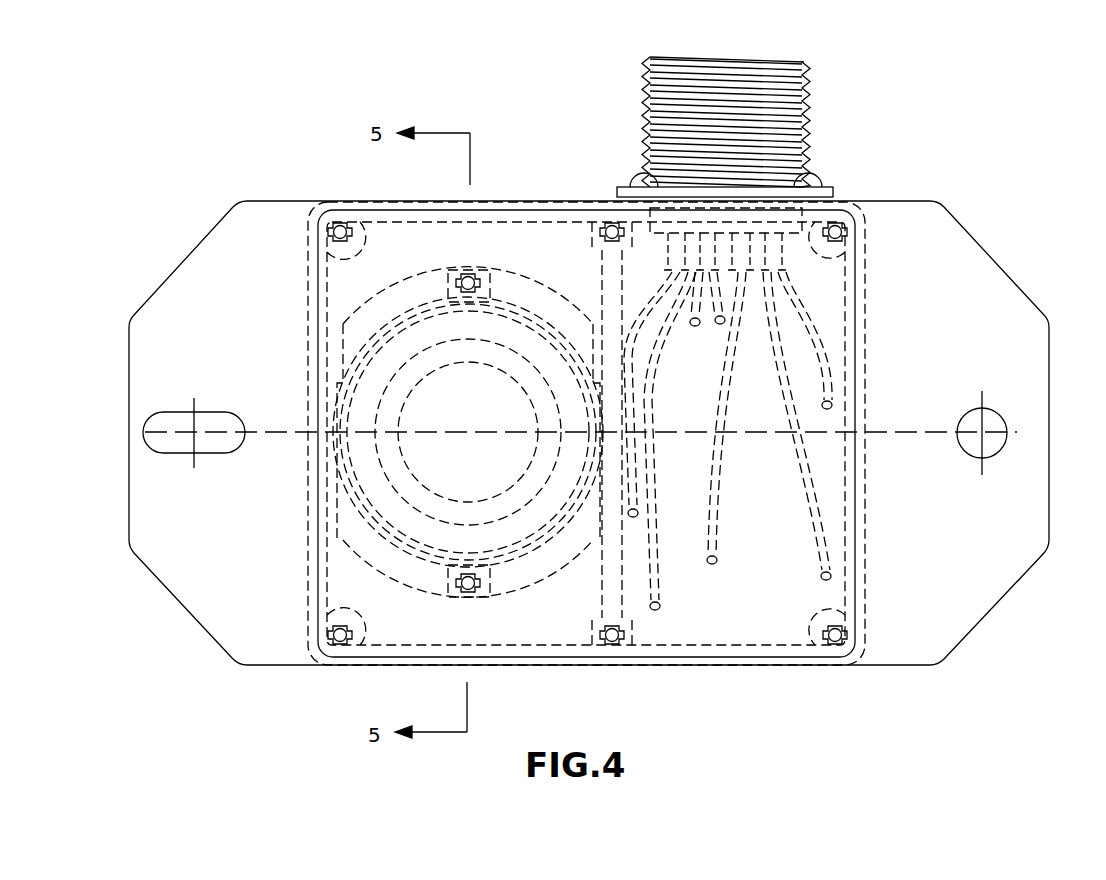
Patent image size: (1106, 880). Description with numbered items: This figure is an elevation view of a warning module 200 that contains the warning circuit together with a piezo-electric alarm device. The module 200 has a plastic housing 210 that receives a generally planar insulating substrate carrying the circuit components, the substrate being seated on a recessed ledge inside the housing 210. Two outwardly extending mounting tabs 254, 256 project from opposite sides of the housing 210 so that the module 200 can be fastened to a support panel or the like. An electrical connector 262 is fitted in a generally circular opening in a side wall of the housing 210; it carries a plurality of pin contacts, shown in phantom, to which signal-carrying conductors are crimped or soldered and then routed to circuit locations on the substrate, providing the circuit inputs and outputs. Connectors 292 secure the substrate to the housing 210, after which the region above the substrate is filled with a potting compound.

The warning module 200 is at (695, 688).
The plastic housing 210 is at (857, 270).
The mounting tab 254 is at (223, 300).
The mounting tab 256 is at (977, 275).
The electrical connector 262 is at (810, 110).
The connectors 292 is at (338, 224).